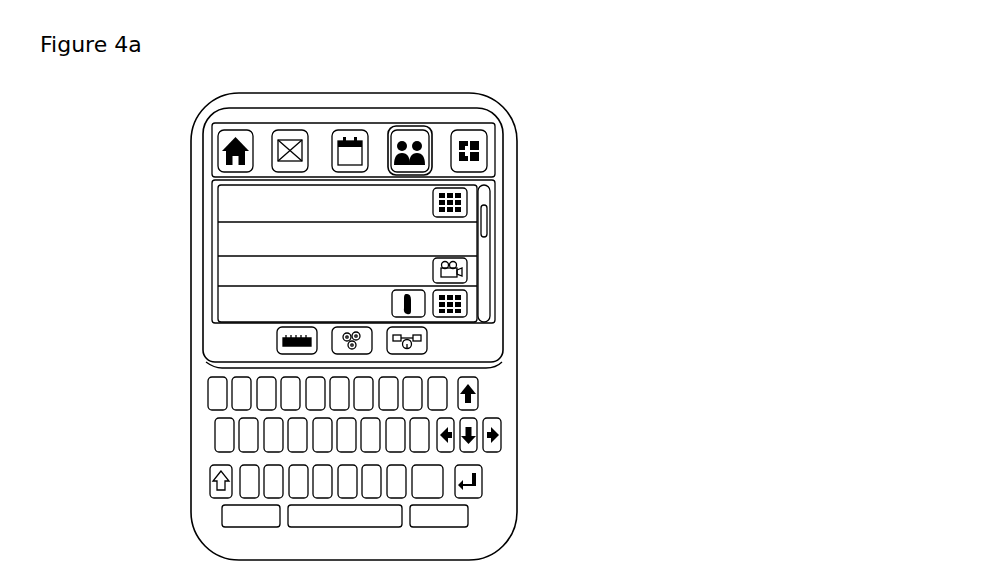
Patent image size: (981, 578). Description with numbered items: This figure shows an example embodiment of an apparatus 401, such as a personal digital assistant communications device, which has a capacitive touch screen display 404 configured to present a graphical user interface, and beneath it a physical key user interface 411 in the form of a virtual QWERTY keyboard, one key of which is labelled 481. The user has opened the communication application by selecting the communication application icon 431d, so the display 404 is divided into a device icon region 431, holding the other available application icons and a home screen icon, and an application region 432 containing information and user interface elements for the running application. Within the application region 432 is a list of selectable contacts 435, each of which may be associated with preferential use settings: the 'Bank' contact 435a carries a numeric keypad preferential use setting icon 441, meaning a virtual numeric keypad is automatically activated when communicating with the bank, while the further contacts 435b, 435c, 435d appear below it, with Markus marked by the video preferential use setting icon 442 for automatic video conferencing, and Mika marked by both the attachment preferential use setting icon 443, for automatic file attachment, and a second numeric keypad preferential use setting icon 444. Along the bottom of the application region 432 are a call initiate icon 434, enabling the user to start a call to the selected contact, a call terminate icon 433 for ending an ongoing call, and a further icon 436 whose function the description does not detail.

The apparatus 401 is at (571, 104).
The capacitive touch screen display 404 is at (323, 115).
The device icon region 431 is at (212, 133).
The communication application icon 431d is at (412, 130).
The list of selectable contacts 435 is at (298, 298).
The 'Bank' contact 435a is at (225, 202).
The list entry Kati 435b is at (227, 233).
The list entry Markus 435c is at (226, 277).
The list entry Mika 435d is at (225, 307).
The numeric keypad preferential use setting icon 441 is at (467, 202).
The video preferential use setting icon 442 is at (457, 265).
The attachment preferential use setting icon 443 is at (462, 295).
The numeric keypad preferential use setting icon 444 is at (420, 307).
The application region 432 is at (492, 335).
The call terminate icon 433 is at (425, 345).
The call initiate icon 434 is at (313, 349).
The settings icon 436 is at (370, 354).
The physical key user interface 411 is at (230, 470).
The mode key 481 is at (458, 519).